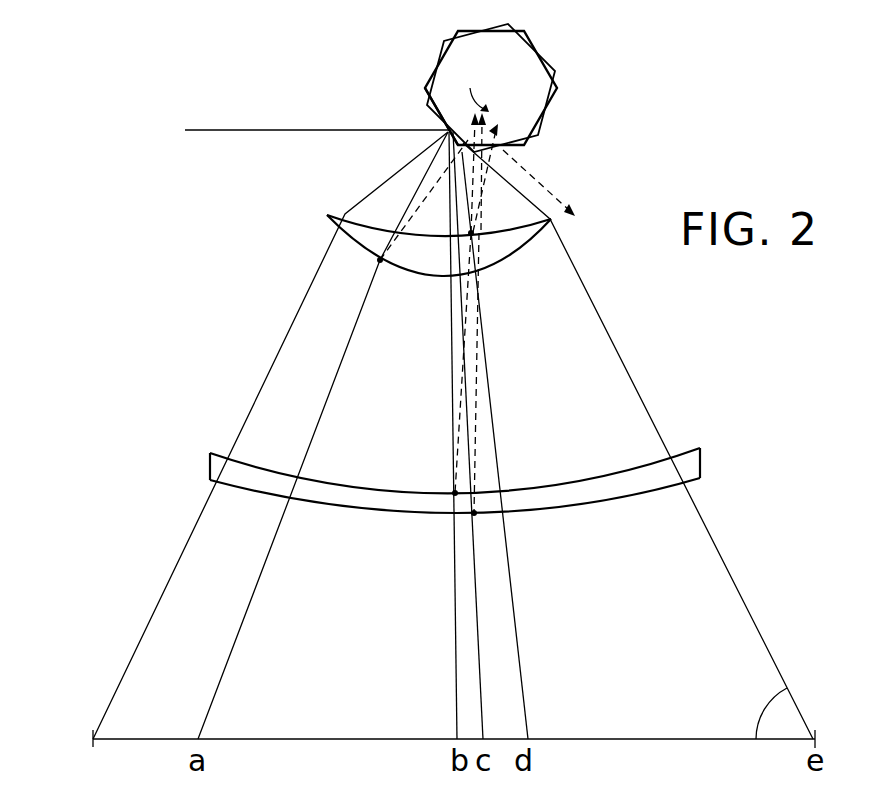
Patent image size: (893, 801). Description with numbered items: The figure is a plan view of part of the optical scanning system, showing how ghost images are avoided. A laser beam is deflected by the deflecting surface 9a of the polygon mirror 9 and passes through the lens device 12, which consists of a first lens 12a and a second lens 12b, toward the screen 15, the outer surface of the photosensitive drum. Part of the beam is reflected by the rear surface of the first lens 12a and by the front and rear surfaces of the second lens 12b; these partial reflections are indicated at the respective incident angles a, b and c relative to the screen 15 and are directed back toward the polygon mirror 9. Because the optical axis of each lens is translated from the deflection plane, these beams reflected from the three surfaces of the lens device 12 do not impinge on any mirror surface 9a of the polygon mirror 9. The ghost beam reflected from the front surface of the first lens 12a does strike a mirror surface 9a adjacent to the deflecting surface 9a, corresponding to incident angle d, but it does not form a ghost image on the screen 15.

The polygon mirror 9 is at (512, 68).
The deflecting surface 9a is at (432, 77).
The lens device 12 is at (421, 364).
The first lens 12a is at (327, 215).
The second lens 12b is at (220, 455).
The screen 15 is at (787, 688).